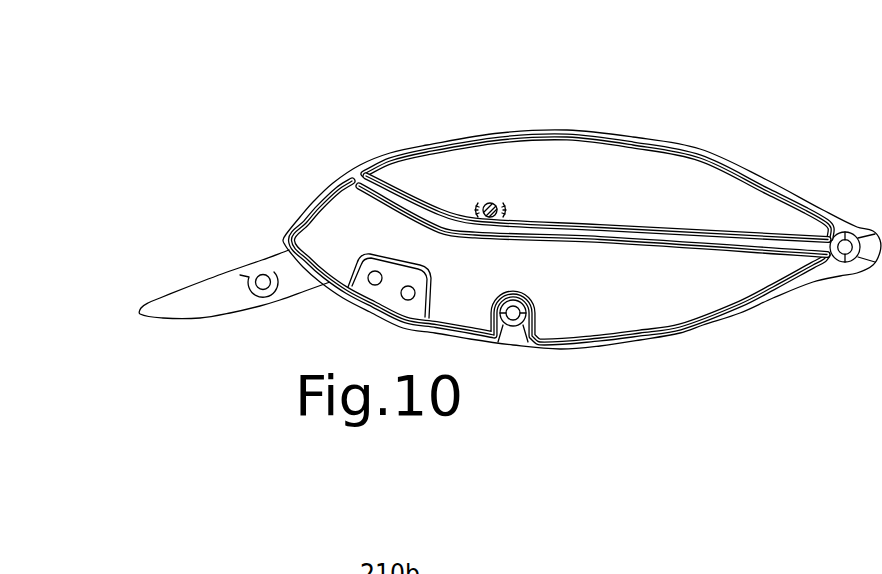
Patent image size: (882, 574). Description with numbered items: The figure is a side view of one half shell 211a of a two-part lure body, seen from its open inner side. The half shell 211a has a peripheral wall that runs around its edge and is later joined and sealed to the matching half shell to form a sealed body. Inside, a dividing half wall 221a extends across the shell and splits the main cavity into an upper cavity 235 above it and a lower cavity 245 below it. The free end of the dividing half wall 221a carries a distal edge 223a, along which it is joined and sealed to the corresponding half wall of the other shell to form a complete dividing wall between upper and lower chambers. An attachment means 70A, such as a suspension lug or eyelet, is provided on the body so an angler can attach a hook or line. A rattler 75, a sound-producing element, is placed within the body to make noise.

The attachment means 70A is at (510, 218).
The half shell 211a is at (363, 163).
The distal edge 223a is at (586, 218).
The dividing half wall 221a is at (578, 220).
The upper cavity 235 is at (655, 196).
The lower cavity 245 is at (505, 273).
The rattler 75 is at (480, 192).